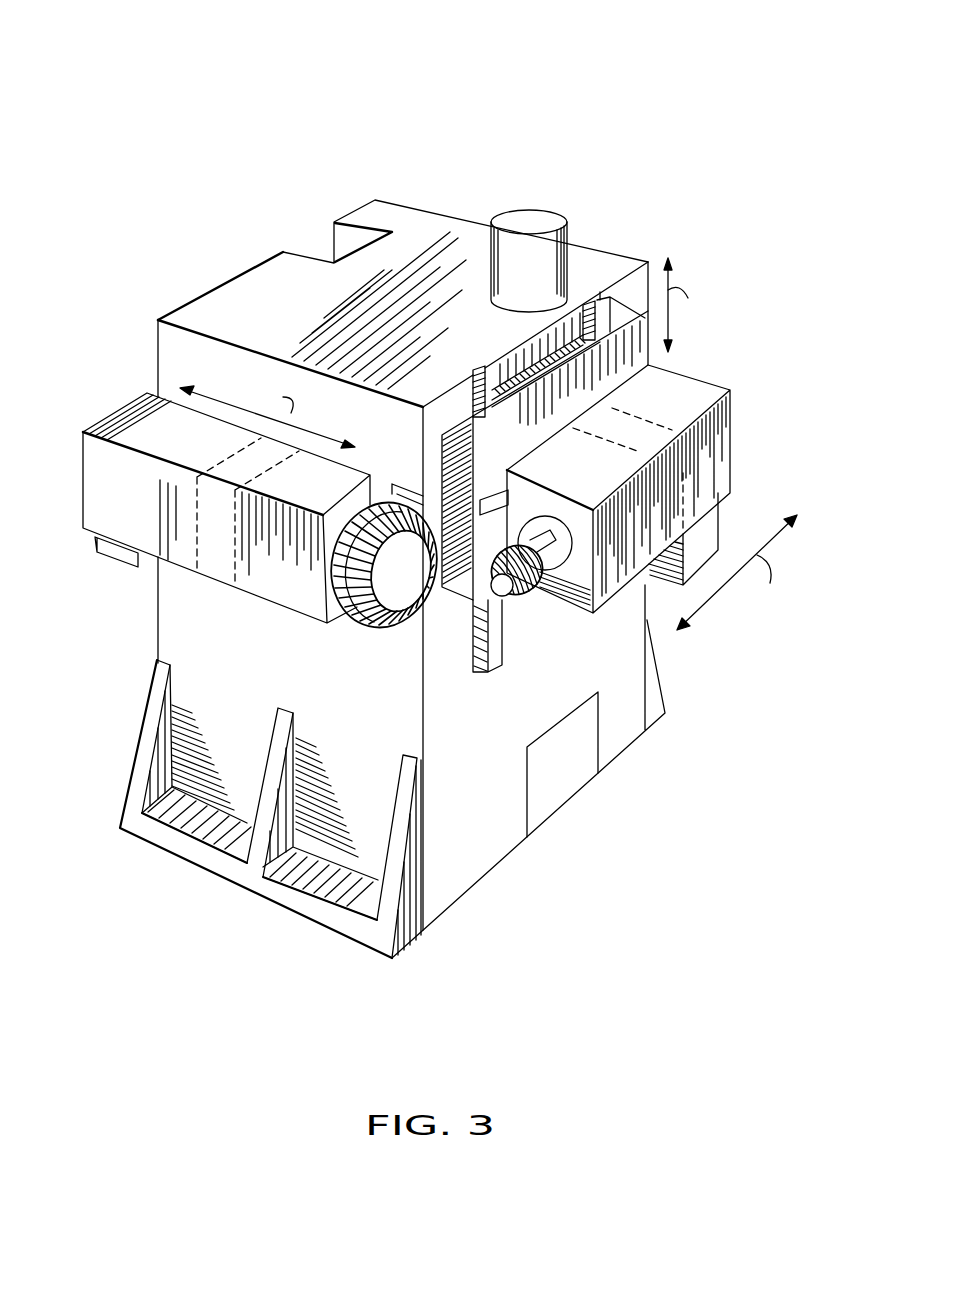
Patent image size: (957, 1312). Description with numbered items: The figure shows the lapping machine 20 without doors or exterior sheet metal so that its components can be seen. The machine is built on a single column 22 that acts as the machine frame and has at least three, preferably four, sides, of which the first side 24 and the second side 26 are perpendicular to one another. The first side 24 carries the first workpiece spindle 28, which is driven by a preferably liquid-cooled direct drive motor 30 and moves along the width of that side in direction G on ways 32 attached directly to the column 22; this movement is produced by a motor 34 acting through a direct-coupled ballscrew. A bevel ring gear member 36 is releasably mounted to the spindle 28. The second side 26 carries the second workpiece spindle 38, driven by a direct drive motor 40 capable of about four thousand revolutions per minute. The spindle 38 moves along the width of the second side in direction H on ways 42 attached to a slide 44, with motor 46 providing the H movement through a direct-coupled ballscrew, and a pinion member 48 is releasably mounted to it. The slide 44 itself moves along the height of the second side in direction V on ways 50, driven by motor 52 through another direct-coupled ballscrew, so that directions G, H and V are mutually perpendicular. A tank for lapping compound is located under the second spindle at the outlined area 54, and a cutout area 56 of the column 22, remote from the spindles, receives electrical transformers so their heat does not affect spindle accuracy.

The lapping machine 20 is at (394, 108).
The column 22 is at (445, 242).
The first side 24 is at (163, 632).
The second side 26 is at (465, 843).
The first workpiece spindle 28 is at (133, 527).
The direct drive motor 30 is at (210, 562).
The ways 32 is at (404, 490).
The motor 34 is at (105, 548).
The bevel ring gear member 36 is at (364, 620).
The second workpiece spindle 38 is at (723, 447).
The direct drive motor 40 is at (657, 425).
The ways 42 is at (490, 492).
The slide 44 is at (623, 322).
The motor 46 is at (707, 535).
The pinion member 48 is at (527, 597).
The ways 50 is at (491, 659).
The motor 52 is at (550, 215).
The tank 54 is at (575, 777).
The cutout area 56 is at (320, 247).